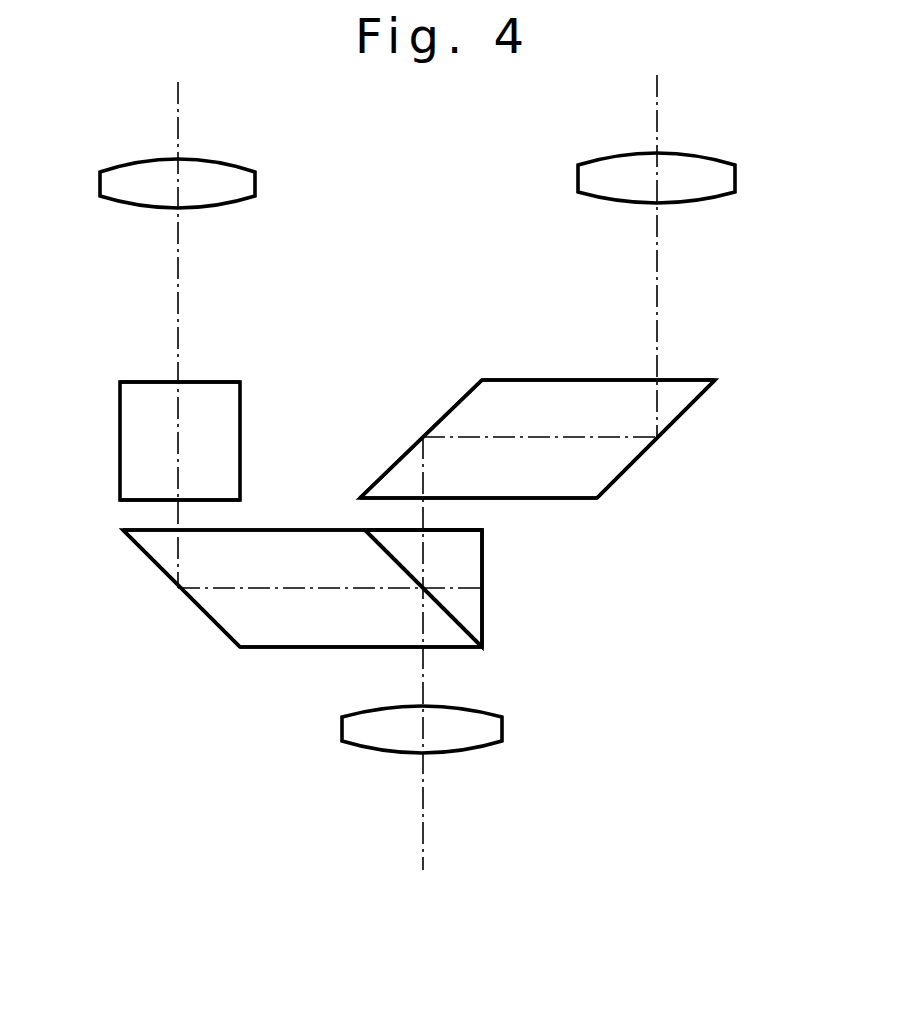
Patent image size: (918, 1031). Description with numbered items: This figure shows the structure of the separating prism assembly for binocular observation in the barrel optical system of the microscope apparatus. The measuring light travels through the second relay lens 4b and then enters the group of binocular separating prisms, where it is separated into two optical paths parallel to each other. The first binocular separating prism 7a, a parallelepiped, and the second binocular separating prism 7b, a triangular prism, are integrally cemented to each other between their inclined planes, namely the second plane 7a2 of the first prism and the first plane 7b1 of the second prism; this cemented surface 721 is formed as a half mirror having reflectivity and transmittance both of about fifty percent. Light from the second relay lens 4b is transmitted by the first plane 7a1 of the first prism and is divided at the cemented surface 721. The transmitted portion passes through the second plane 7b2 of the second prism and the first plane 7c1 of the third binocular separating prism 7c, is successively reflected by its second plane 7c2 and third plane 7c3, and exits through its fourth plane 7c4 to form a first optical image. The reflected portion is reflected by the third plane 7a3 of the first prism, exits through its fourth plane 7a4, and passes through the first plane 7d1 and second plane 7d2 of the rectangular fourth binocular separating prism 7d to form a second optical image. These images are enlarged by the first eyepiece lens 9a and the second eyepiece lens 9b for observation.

The first eyepiece lens 9a is at (736, 178).
The second eyepiece lens 9b is at (100, 184).
The fourth binocular separating prism 7d is at (126, 454).
The first plane of the fourth binocular separating prism 7d1 is at (135, 500).
The second plane of the fourth binocular separating prism 7d2 is at (142, 382).
The third binocular separating prism 7c is at (633, 464).
The first plane of the third binocular separating prism 7c1 is at (596, 500).
The second plane of the third binocular separating prism 7c2 is at (446, 406).
The third plane of the third binocular separating prism 7c3 is at (690, 406).
The fourth plane of the third binocular separating prism 7c4 is at (686, 378).
The first binocular separating prism 7a is at (227, 632).
The first plane of the first binocular separating prism 7a1 is at (268, 650).
The second plane of the first binocular separating prism 7a2 is at (492, 634).
The third plane of the first binocular separating prism 7a3 is at (147, 554).
The fourth plane of the first binocular separating prism 7a4 is at (290, 530).
The second binocular separating prism 7b is at (482, 585).
The first plane of the second binocular separating prism 7b1 is at (467, 637).
The second plane of the second binocular separating prism 7b2 is at (472, 530).
The cemented surface 721 is at (582, 620).
The second relay lens 4b is at (342, 730).